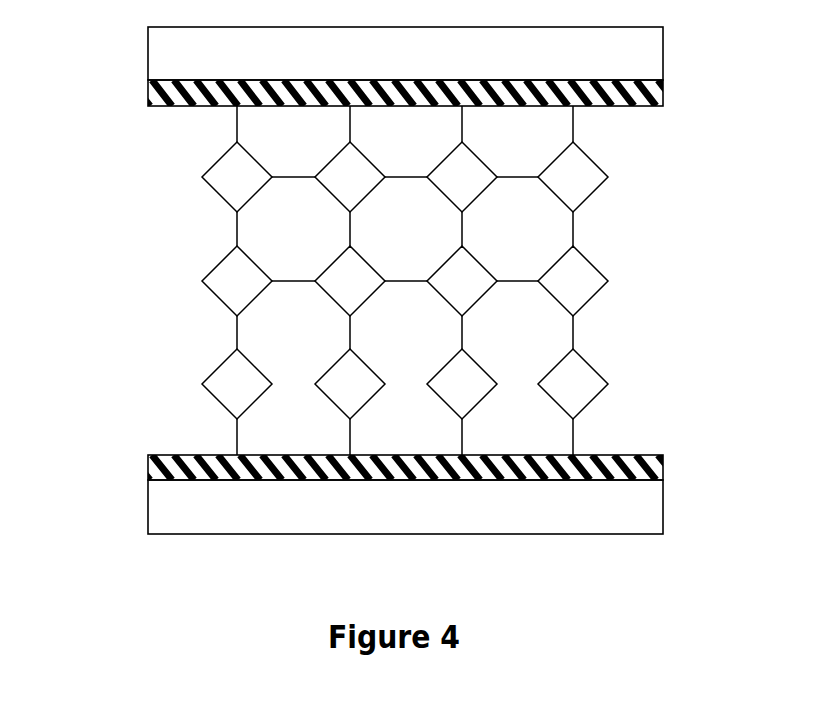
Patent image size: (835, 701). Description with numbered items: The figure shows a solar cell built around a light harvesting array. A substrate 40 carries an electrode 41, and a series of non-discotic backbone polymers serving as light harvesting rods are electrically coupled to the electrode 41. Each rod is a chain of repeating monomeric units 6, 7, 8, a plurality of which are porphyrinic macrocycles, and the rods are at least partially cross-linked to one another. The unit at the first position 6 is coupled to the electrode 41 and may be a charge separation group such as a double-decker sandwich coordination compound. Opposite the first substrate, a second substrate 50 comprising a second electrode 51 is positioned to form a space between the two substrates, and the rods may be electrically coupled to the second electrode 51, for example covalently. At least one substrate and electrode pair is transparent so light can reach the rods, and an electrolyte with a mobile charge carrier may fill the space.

The second substrate 50 is at (405, 53).
The second electrode 51 is at (663, 93).
The substrate 40 is at (405, 507).
The electrode 41 is at (148, 455).
The repeating monomeric unit 8 is at (237, 177).
The repeating monomeric unit 7 is at (237, 281).
The first position 6 is at (237, 384).